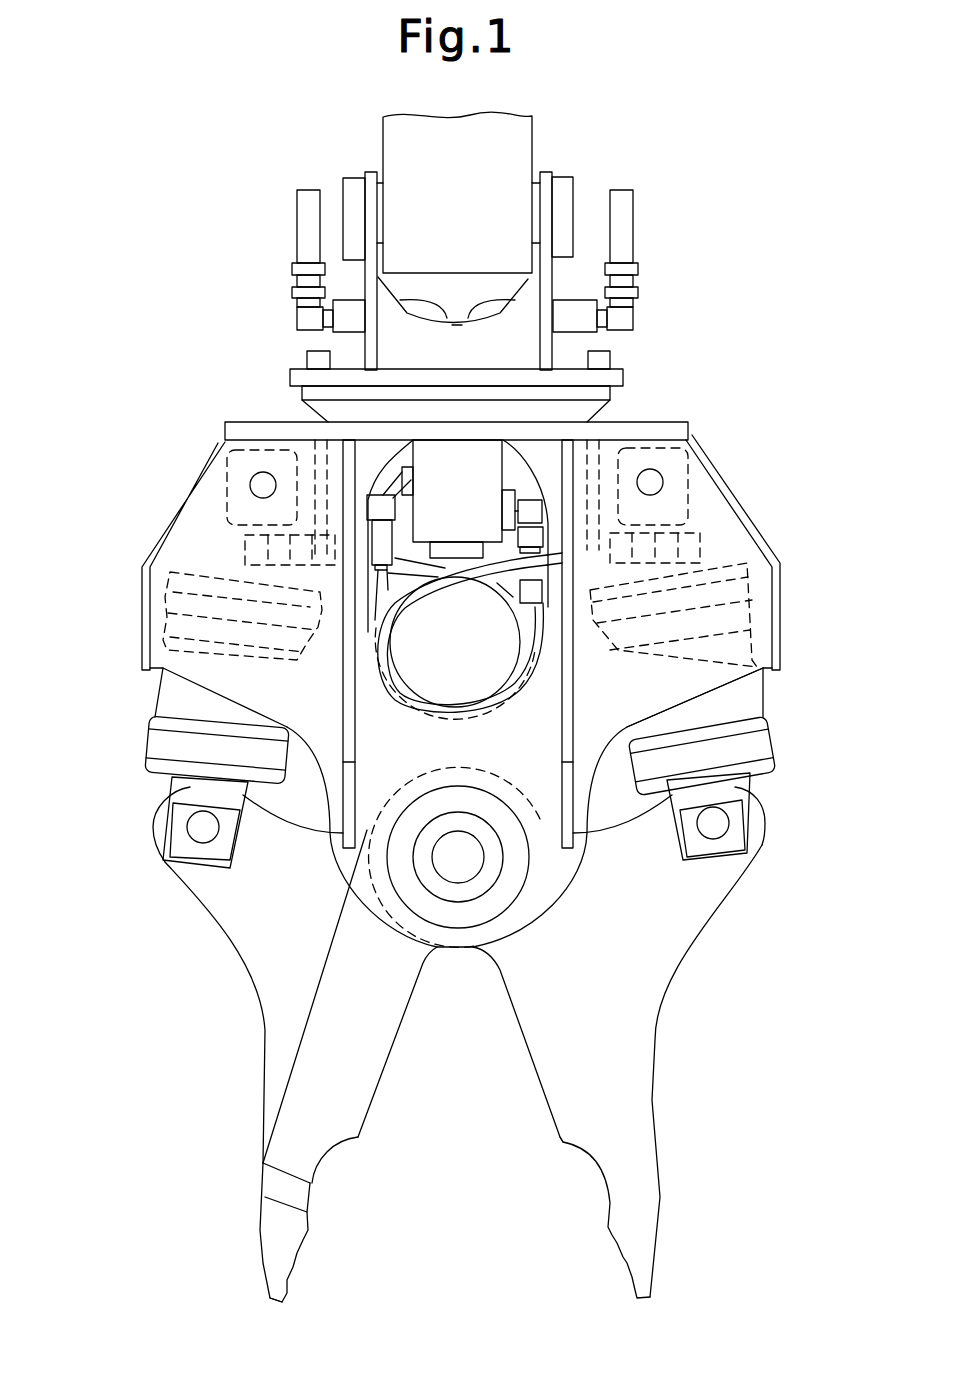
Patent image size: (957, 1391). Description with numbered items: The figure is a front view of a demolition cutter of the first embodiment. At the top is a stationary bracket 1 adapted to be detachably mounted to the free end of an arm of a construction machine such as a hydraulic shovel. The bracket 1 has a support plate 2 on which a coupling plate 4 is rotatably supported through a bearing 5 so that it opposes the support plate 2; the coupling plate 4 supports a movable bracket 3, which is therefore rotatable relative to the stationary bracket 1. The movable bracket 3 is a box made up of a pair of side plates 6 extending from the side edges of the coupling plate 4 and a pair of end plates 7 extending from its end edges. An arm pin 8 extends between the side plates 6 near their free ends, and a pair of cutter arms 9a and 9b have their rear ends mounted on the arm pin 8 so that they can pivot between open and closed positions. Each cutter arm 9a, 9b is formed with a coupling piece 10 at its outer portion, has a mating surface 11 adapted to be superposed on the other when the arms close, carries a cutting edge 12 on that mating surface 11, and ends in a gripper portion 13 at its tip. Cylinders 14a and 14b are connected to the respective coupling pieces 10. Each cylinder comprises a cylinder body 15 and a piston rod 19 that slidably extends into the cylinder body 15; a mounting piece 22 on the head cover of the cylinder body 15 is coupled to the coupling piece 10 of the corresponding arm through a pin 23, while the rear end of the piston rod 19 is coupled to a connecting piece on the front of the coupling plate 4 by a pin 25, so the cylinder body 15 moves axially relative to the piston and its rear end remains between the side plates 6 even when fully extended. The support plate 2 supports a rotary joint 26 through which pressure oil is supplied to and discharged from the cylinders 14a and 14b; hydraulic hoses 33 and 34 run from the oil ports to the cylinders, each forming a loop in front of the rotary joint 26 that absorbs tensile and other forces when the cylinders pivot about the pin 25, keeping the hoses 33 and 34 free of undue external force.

The stationary bracket 1 is at (366, 165).
The support plate 2 is at (303, 379).
The movable bracket 3 is at (203, 437).
The coupling plate 4 is at (263, 431).
The bearing 5 is at (600, 410).
The side plates 6 is at (160, 638).
The end plates 7 is at (143, 565).
The arm pin 8 is at (457, 870).
The cutter arm 9a is at (275, 1080).
The cutter arm 9b is at (637, 1035).
The coupling piece 10 is at (205, 880).
The mating surfaces 11 is at (380, 1068).
The cutting edges 12 is at (362, 1135).
The gripper portions 13 is at (283, 1247).
The cylinder 14a is at (150, 697).
The cylinder 14b is at (775, 697).
The cylinder body 15 is at (167, 747).
The piston rod 19 is at (337, 558).
The mounting piece 22 is at (190, 786).
The pin 23 is at (193, 828).
The pin 25 is at (256, 481).
The rotary joint 26 is at (476, 455).
The hydraulic hose 33 is at (390, 583).
The hydraulic hose 34 is at (418, 708).